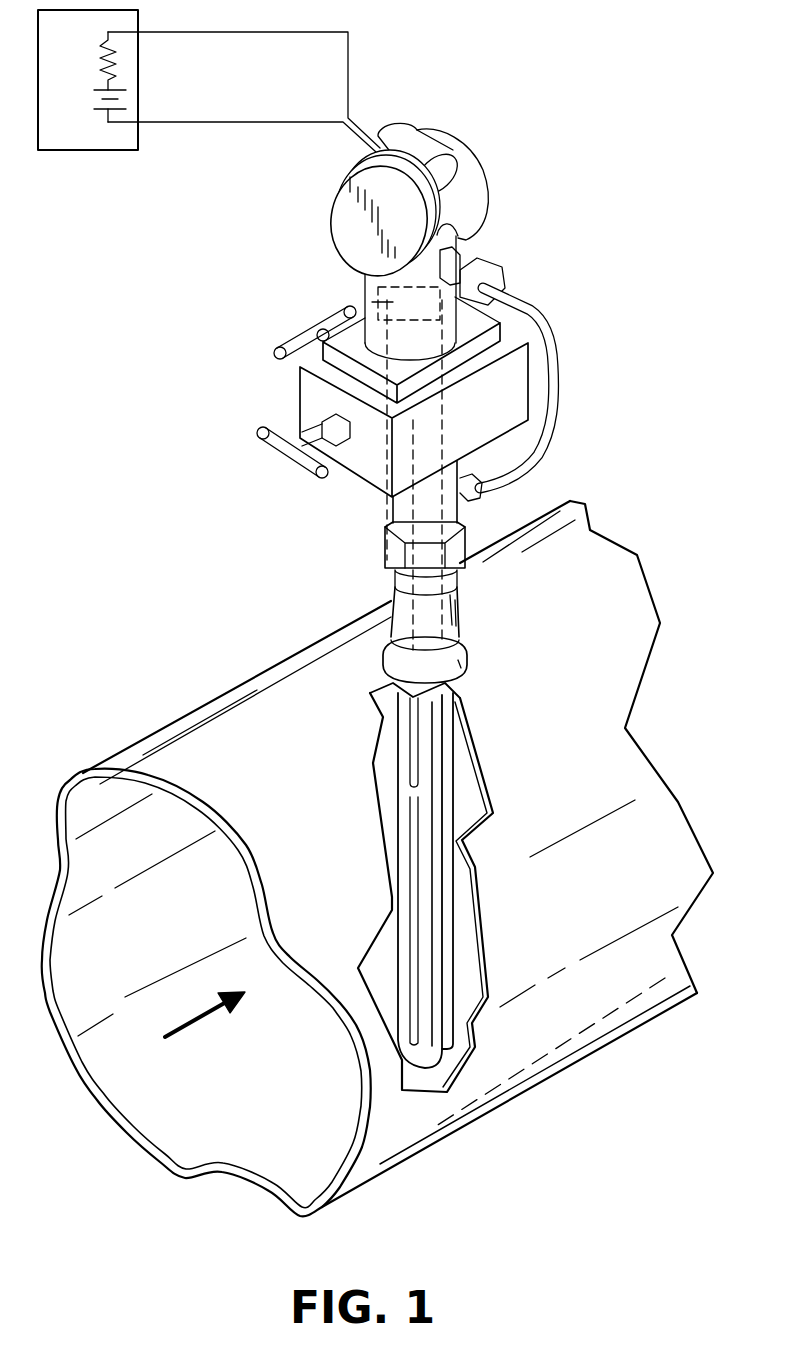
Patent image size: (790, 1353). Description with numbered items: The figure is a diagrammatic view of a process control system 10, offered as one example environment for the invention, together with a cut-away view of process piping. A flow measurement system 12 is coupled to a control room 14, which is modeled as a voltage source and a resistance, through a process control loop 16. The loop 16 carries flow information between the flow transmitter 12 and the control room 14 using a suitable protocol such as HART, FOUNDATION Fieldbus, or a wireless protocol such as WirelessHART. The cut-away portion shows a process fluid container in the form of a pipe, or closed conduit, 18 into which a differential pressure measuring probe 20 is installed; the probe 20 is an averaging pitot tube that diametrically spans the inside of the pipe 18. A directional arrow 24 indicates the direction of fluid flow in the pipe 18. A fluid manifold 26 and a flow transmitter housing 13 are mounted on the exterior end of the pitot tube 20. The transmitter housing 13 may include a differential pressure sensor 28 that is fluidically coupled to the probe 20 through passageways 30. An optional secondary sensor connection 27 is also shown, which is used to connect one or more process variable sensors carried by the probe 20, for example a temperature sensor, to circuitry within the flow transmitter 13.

The process control system 10 is at (123, 483).
The flow measurement system 12 is at (580, 295).
The flow transmitter housing 13 is at (458, 192).
The control room 14 is at (76, 62).
The process control loop 16 is at (200, 32).
The pipe 18 is at (57, 857).
The differential pressure measuring probe 20 is at (377, 765).
The directional arrow 24 is at (207, 1018).
The fluid manifold 26 is at (513, 375).
The secondary sensor connection 27 is at (522, 297).
The differential pressure sensor 28 is at (363, 307).
The passageways 30 is at (392, 530).